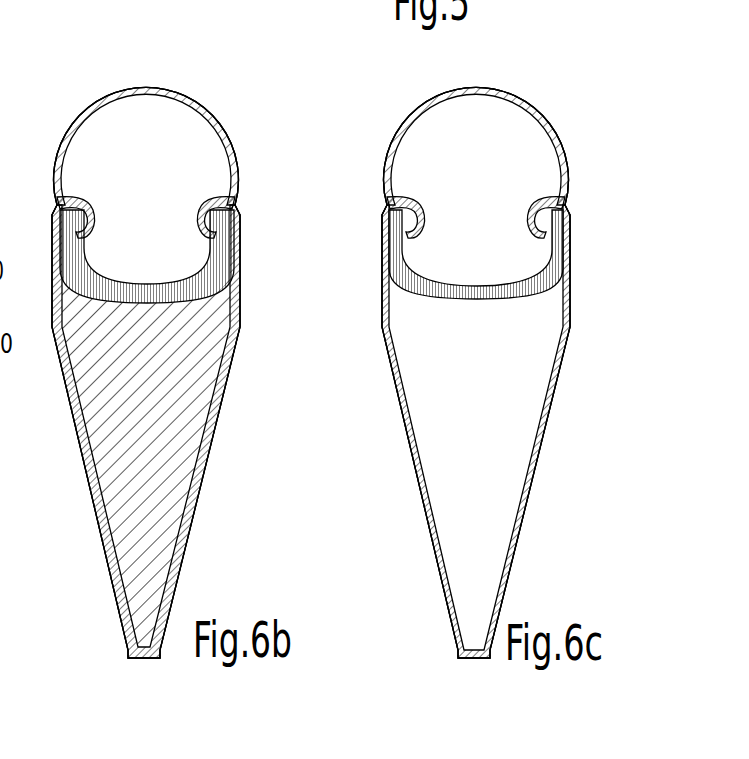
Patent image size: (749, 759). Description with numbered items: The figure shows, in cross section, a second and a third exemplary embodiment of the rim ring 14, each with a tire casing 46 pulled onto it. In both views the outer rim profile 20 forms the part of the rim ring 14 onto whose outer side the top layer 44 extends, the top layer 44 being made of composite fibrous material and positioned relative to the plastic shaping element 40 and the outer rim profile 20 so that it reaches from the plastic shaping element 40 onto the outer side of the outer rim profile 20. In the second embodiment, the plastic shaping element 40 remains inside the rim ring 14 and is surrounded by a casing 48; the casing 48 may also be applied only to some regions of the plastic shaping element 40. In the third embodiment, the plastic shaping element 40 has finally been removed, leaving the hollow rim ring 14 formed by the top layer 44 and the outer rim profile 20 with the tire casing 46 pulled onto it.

In FIG. 6B, the rim ring 14 is at (72, 575).
In FIG. 6C, the rim ring 14 is at (451, 380).
In FIG. 6B, the outer rim profile 20 is at (238, 245).
In FIG. 6C, the outer rim profile 20 is at (489, 307).
In FIG. 6B, the plastic shaping element 40 is at (187, 365).
In FIG. 6B, the top layer 44 is at (87, 470).
In FIG. 6C, the top layer 44 is at (451, 372).
In FIG. 6B, the tire casing 46 is at (207, 110).
In FIG. 6C, the tire casing 46 is at (487, 141).
In FIG. 6B, the casing 48 is at (200, 488).